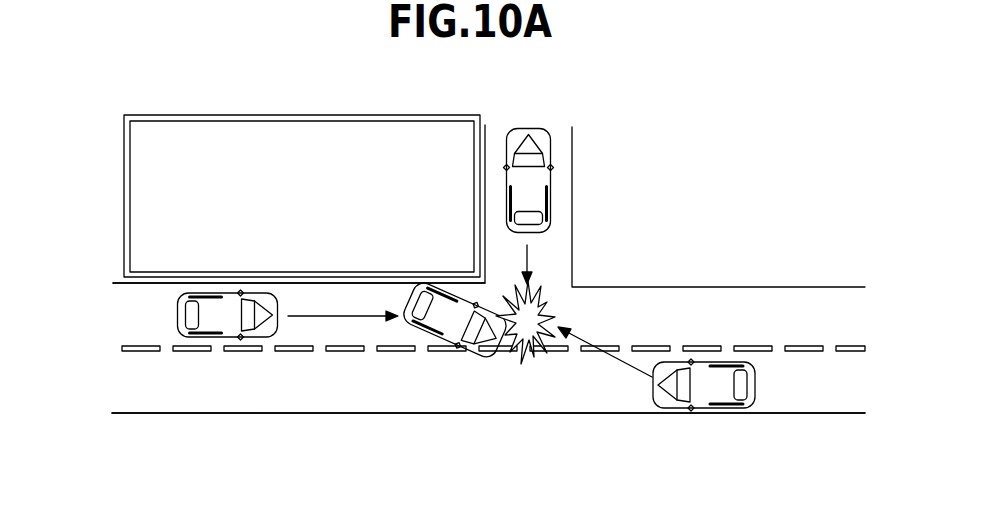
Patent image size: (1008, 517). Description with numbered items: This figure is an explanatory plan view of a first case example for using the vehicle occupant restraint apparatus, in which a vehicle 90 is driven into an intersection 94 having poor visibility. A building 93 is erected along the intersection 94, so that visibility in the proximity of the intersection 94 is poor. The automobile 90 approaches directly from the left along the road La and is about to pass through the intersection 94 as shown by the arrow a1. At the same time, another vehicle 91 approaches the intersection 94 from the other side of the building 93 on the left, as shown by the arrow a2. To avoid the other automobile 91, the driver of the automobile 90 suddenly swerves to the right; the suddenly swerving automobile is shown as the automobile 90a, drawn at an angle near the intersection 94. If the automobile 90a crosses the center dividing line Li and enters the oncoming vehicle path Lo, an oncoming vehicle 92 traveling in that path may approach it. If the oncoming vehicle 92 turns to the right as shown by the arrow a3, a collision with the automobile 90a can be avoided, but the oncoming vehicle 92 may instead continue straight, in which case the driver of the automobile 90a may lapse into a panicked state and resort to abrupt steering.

The vehicle 90 is at (223, 296).
The suddenly swerving automobile 90a is at (425, 336).
The other vehicle 91 is at (527, 135).
The oncoming vehicle 92 is at (703, 362).
The building 93 is at (355, 147).
The intersection 94 is at (555, 298).
The road La is at (128, 312).
The center dividing line Li is at (346, 353).
The oncoming vehicle path Lo is at (369, 402).
The arrow a1 is at (343, 305).
The arrow a2 is at (540, 264).
The arrow a3 is at (605, 360).